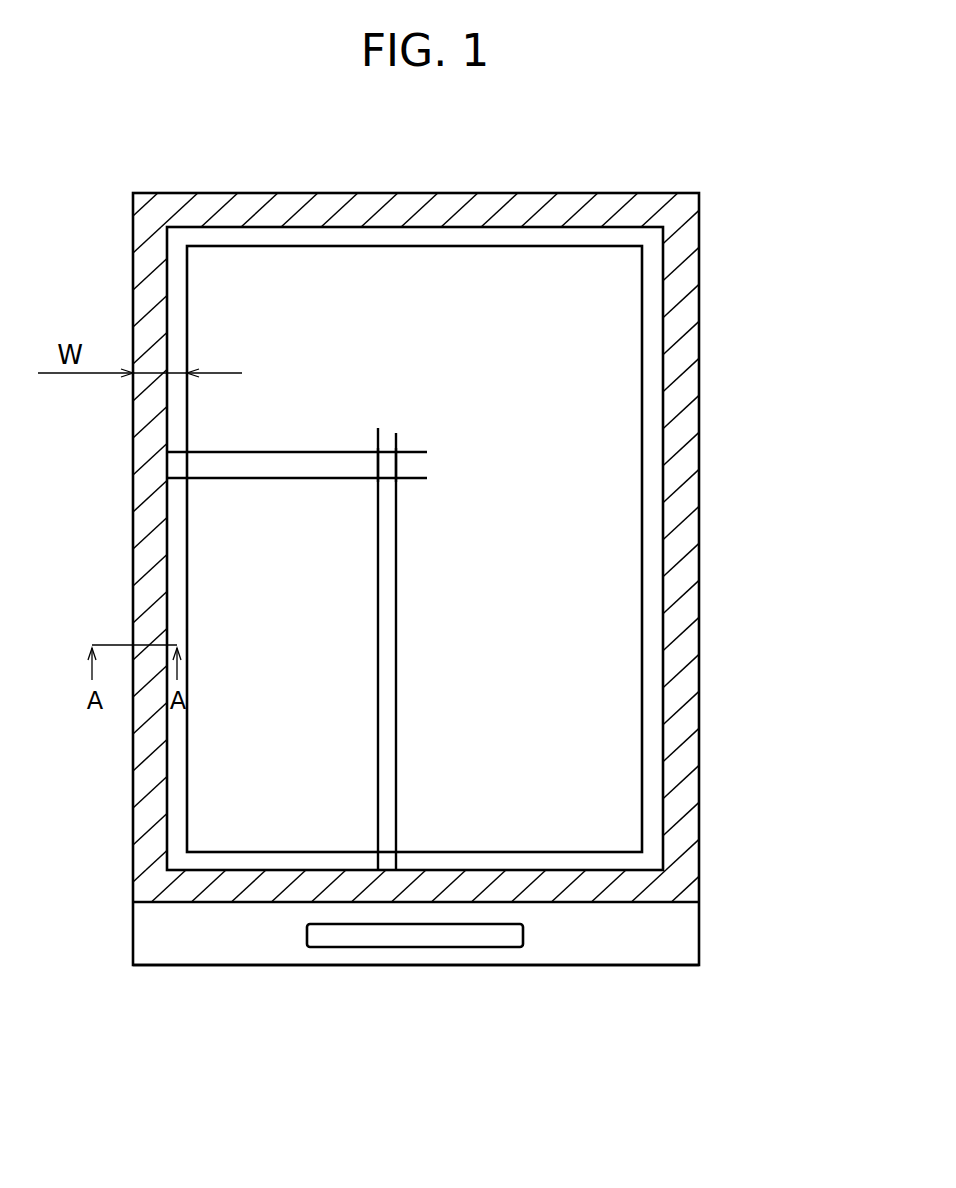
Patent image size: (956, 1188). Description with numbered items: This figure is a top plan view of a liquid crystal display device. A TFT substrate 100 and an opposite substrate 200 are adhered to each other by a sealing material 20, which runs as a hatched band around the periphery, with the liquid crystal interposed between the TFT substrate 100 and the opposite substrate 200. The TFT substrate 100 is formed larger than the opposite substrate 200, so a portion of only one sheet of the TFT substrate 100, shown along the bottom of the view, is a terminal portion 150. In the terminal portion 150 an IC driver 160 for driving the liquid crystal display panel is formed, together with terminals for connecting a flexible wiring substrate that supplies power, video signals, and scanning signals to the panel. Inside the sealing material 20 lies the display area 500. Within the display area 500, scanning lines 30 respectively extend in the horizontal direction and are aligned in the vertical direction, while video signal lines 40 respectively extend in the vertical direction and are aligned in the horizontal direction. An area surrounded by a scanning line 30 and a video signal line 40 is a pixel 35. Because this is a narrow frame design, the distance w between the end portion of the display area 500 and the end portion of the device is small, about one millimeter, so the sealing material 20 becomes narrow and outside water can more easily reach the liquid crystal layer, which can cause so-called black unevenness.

The sealing material 20 is at (684, 427).
The scanning lines 30 is at (257, 480).
The pixel 35 is at (385, 465).
The video signal lines 40 is at (398, 580).
The TFT substrate 100 is at (700, 937).
The terminal portion 150 is at (607, 946).
The IC driver 160 is at (437, 935).
The opposite substrate 200 is at (700, 673).
The display area 500 is at (617, 537).